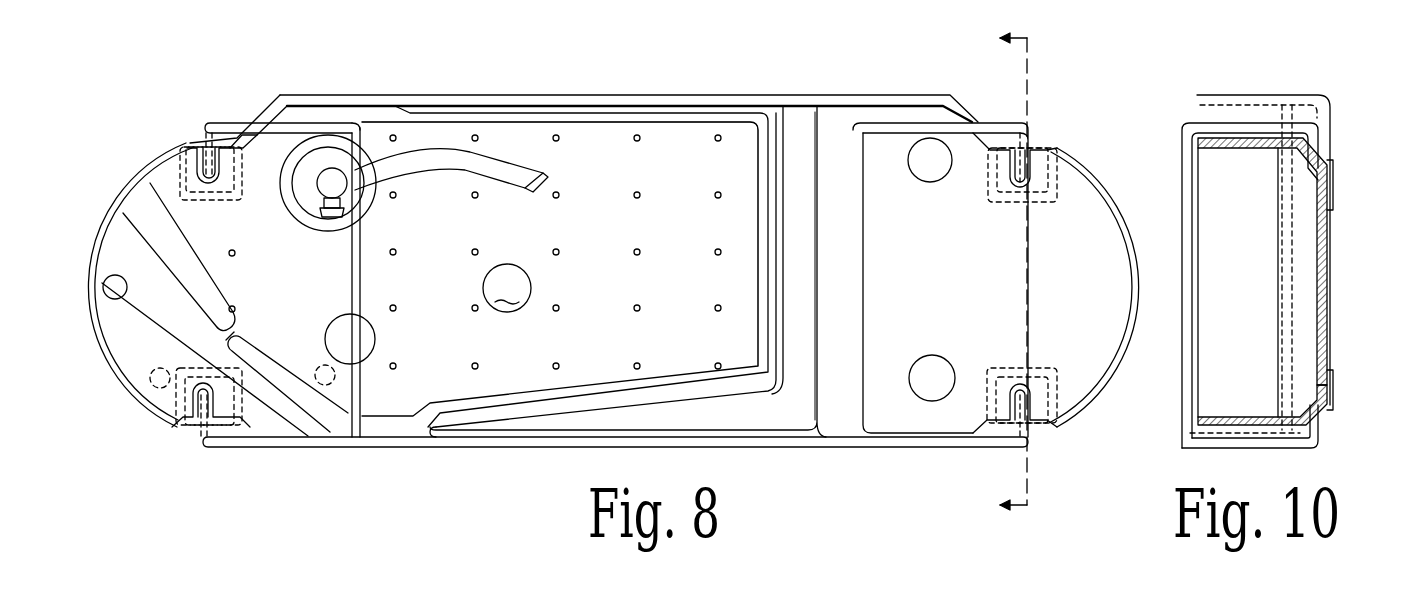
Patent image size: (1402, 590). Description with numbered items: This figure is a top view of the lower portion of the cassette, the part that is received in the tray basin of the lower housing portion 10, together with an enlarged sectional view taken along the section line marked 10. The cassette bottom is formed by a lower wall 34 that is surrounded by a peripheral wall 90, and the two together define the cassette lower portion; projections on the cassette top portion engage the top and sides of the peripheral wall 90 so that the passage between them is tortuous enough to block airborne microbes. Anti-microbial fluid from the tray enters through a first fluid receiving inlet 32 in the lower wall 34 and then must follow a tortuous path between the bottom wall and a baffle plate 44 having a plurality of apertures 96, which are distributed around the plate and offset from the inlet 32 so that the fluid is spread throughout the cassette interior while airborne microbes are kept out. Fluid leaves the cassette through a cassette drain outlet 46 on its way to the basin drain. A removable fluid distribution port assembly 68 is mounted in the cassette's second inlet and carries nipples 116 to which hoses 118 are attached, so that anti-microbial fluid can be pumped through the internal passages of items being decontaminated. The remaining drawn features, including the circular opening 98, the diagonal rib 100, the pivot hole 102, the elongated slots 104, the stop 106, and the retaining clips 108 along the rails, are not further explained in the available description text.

In FIG. 8, the lower housing portion 10 is at (991, 277).
In FIG. 8, the first fluid receiving inlet 32 is at (335, 380).
In FIG. 8, the lower wall 34 is at (939, 306).
In FIG. 10, the lower wall 34 is at (1330, 280).
In FIG. 8, the baffle plate 44 is at (686, 238).
In FIG. 8, the cassette drain outlet 46 is at (160, 390).
In FIG. 8, the fluid distribution port assembly 68 is at (312, 200).
In FIG. 8, the peripheral wall 90 is at (1085, 400).
In FIG. 10, the peripheral wall 90 is at (1232, 148).
In FIG. 8, the apertures 96 is at (637, 362).
In FIG. 8, the circular opening 98 is at (333, 323).
In FIG. 8, the diagonal rib 100 is at (179, 319).
In FIG. 8, the pivot hole 102 is at (102, 287).
In FIG. 8, the elongated slot 104 is at (167, 244).
In FIG. 8, the stop 106 is at (232, 336).
In FIG. 8, the retaining clip / rail 108 is at (918, 123).
In FIG. 10, the retaining clip / rail 108 is at (1192, 125).
In FIG. 8, the nipples 116 is at (318, 220).
In FIG. 8, the hoses 118 is at (417, 168).